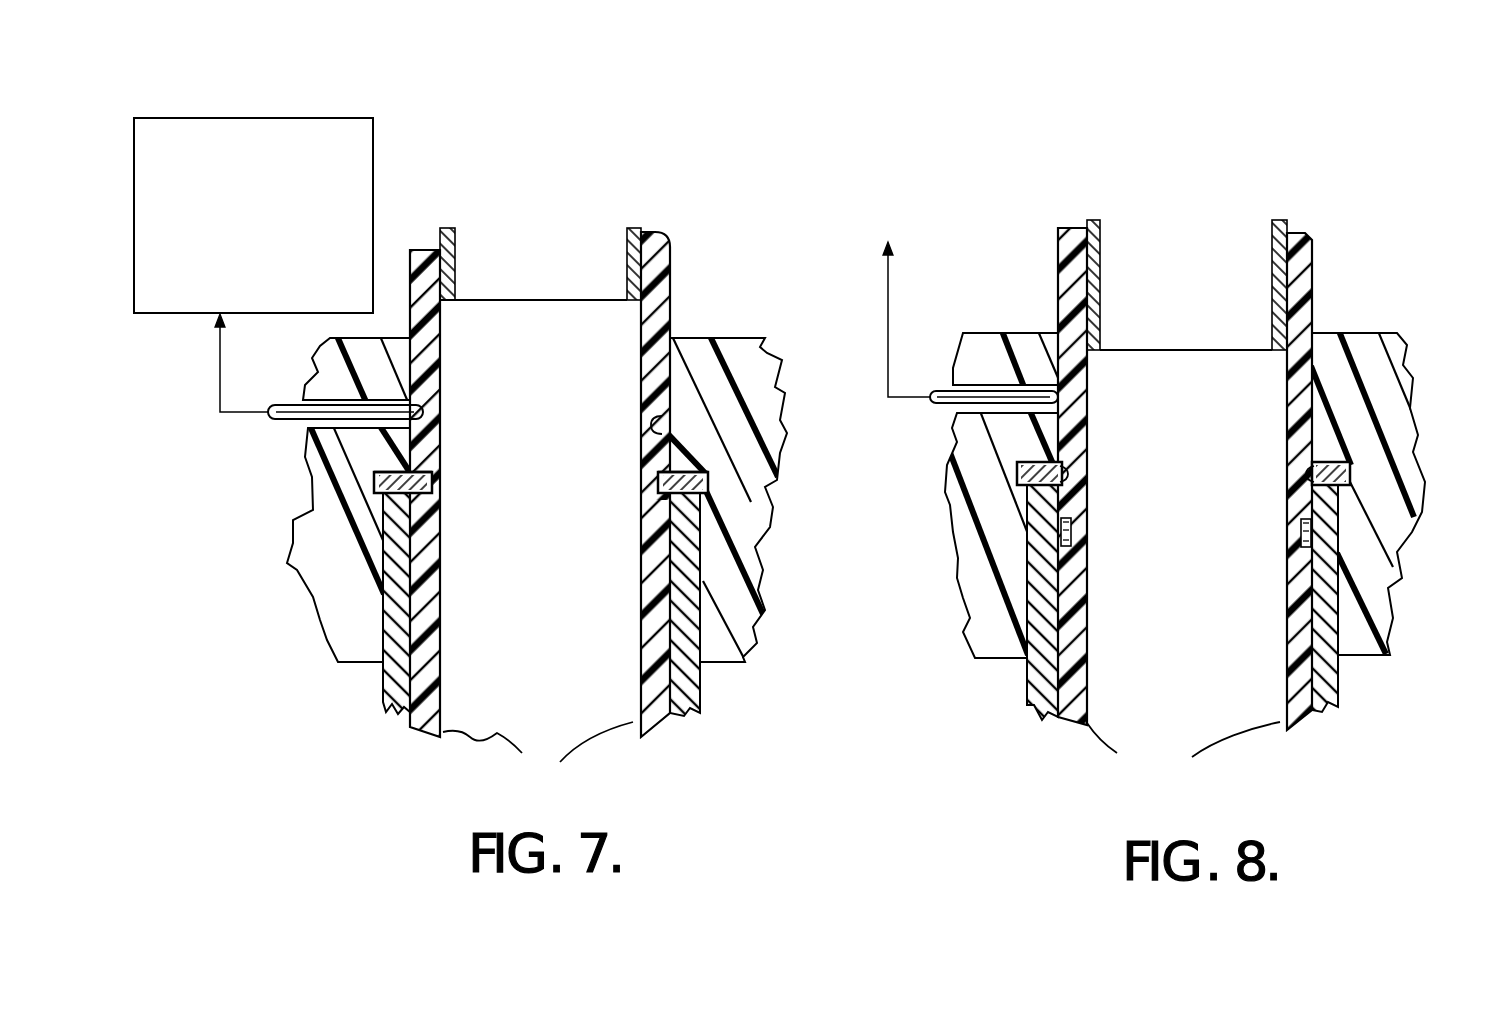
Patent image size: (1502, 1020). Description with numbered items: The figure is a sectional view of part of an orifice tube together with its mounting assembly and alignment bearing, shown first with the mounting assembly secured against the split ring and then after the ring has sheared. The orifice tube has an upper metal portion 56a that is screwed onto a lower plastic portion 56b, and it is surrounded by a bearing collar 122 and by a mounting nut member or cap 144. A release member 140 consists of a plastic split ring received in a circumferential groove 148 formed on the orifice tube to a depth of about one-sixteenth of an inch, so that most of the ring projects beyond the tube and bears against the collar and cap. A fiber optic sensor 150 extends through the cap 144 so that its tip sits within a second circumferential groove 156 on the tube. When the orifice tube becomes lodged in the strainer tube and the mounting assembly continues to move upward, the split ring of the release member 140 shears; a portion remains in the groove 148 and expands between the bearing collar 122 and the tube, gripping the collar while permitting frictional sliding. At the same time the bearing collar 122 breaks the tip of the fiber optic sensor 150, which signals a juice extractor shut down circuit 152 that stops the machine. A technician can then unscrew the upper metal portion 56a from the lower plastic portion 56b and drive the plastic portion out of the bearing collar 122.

In FIG. 7, the juice extractor shut down circuit 152 is at (187, 118).
In FIG. 7, the fiber optic sensor 150 is at (285, 425).
In FIG. 8, the fiber optic sensor 150 is at (940, 406).
In FIG. 7, the upper metal portion of the orifice tube 56a is at (448, 236).
In FIG. 8, the upper metal portion of the orifice tube 56a is at (1093, 236).
In FIG. 7, the lower plastic portion of the orifice tube 56b is at (538, 752).
In FIG. 8, the lower plastic portion of the orifice tube 56b is at (1183, 750).
In FIG. 7, the mounting nut member or cap 144 is at (715, 339).
In FIG. 8, the mounting nut member or cap 144 is at (1358, 338).
In FIG. 7, the groove 148 is at (658, 481).
In FIG. 8, the groove 148 is at (1073, 542).
In FIG. 7, the release member 140 is at (378, 488).
In FIG. 8, the release member 140 is at (1020, 486).
In FIG. 7, the bearing collar 122 is at (385, 712).
In FIG. 8, the bearing collar 122 is at (1040, 715).
In FIG. 7, the circumferential groove 156 is at (668, 430).
In FIG. 8, the circumferential groove 156 is at (1027, 540).